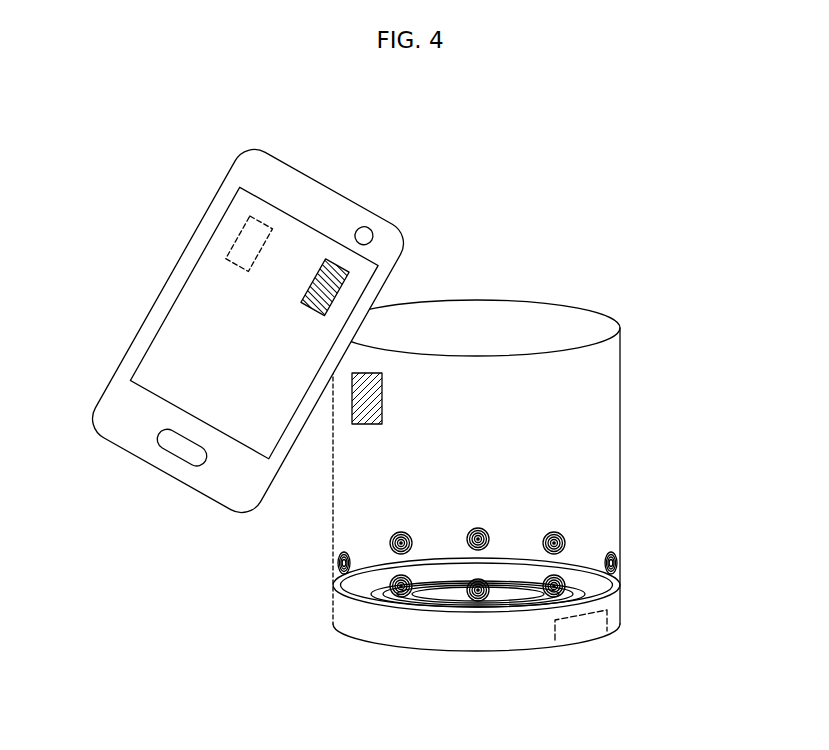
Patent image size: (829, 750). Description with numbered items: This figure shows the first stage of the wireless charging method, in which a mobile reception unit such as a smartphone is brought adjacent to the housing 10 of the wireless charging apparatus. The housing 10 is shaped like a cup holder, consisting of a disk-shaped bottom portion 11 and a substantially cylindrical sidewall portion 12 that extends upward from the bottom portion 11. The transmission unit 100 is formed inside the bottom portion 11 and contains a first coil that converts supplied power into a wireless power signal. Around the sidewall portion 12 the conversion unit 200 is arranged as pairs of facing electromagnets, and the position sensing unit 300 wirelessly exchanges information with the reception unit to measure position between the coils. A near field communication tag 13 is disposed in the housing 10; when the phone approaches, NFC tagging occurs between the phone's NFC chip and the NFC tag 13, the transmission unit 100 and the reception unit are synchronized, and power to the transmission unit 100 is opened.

The housing 10 is at (506, 501).
The bottom portion 11 is at (614, 610).
The sidewall portion 12 is at (605, 420).
The near field communication tag 13 is at (380, 426).
The transmission unit 100 is at (425, 602).
The conversion unit 200 is at (380, 541).
The position sensing unit 300 is at (583, 632).